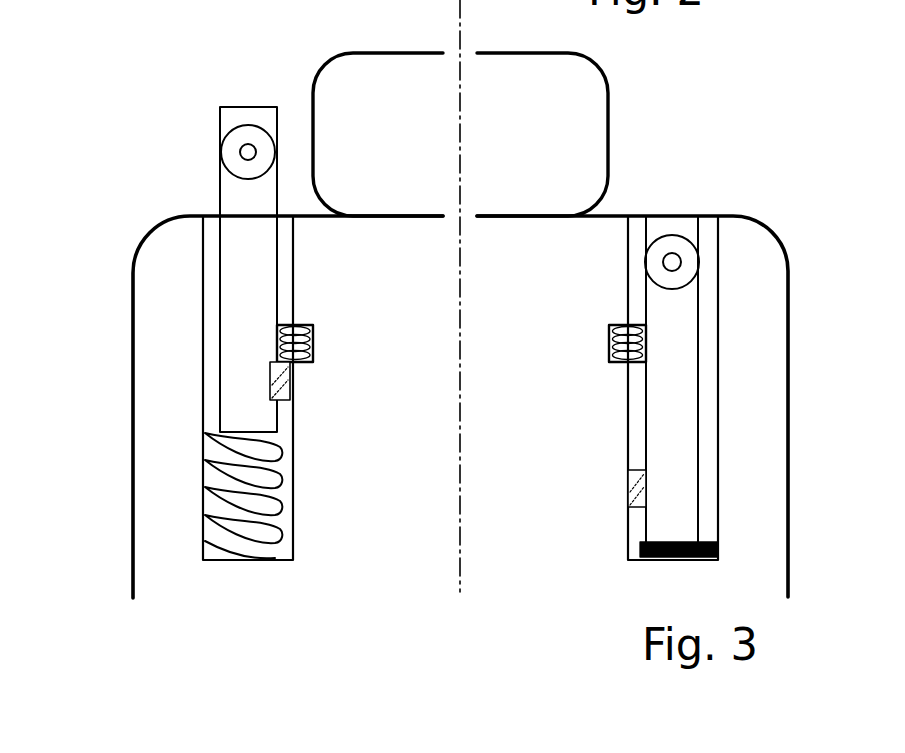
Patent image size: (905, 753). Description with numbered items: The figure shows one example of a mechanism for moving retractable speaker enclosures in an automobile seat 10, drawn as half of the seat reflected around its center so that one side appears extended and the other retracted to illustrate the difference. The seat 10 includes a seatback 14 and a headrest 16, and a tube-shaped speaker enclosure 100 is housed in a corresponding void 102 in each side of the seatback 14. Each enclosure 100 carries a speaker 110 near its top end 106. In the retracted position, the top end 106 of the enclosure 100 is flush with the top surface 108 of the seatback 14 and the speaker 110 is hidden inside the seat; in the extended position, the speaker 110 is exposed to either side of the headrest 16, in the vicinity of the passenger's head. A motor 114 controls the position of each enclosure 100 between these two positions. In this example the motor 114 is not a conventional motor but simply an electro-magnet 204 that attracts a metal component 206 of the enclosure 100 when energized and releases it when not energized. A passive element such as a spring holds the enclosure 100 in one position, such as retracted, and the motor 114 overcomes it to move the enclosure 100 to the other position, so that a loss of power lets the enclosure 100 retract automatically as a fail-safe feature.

The automobile seat 10 is at (68, 204).
The seatback 14 is at (335, 270).
The headrest 16 is at (389, 53).
The tube-shaped speaker enclosure 100 is at (220, 368).
The void 102 is at (203, 402).
The top end 106 is at (233, 106).
The top surface 108 is at (190, 216).
The speaker 110 is at (249, 125).
The motor 114 is at (317, 325).
The electro-magnet 204 is at (294, 324).
The metal component 206 is at (288, 387).